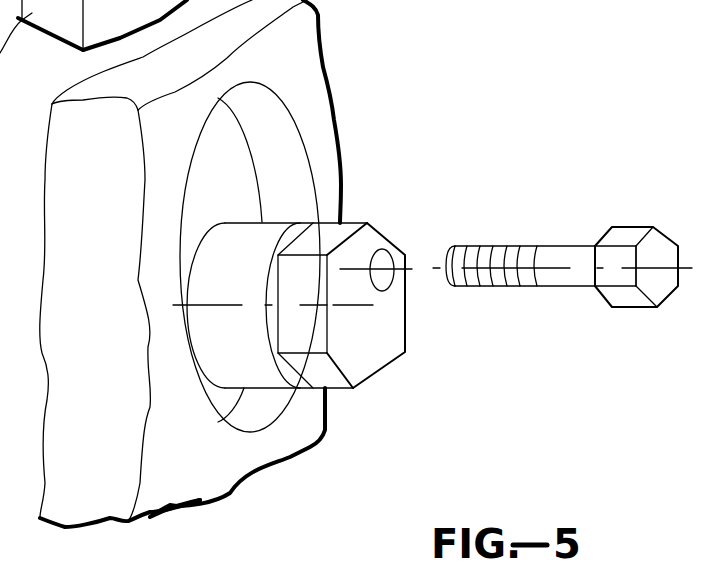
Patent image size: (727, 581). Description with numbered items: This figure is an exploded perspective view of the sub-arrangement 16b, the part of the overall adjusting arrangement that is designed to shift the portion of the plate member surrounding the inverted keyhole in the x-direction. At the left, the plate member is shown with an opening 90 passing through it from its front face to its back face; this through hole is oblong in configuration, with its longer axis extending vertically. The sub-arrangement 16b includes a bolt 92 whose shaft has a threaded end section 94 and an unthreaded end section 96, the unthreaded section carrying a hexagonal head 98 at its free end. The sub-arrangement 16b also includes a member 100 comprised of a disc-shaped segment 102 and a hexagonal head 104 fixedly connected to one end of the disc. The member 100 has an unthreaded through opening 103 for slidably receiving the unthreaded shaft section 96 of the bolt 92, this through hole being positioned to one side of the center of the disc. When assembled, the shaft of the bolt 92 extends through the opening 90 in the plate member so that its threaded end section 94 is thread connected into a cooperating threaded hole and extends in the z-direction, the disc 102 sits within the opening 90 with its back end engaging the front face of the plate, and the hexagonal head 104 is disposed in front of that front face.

The sub-arrangement 16b is at (452, 157).
The opening 90 is at (291, 148).
The bolt 92 is at (562, 249).
The threaded end section 94 is at (500, 252).
The unthreaded end section 96 is at (567, 275).
The hexagonal head 98 is at (632, 233).
The member 100 is at (360, 374).
The disc-shaped segment 102 is at (273, 233).
The unthreaded through opening 103 is at (384, 262).
The hexagonal head 104 is at (368, 362).